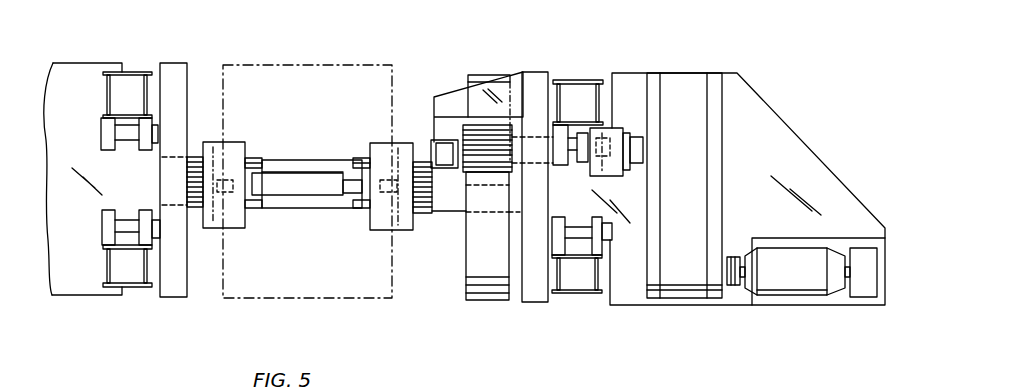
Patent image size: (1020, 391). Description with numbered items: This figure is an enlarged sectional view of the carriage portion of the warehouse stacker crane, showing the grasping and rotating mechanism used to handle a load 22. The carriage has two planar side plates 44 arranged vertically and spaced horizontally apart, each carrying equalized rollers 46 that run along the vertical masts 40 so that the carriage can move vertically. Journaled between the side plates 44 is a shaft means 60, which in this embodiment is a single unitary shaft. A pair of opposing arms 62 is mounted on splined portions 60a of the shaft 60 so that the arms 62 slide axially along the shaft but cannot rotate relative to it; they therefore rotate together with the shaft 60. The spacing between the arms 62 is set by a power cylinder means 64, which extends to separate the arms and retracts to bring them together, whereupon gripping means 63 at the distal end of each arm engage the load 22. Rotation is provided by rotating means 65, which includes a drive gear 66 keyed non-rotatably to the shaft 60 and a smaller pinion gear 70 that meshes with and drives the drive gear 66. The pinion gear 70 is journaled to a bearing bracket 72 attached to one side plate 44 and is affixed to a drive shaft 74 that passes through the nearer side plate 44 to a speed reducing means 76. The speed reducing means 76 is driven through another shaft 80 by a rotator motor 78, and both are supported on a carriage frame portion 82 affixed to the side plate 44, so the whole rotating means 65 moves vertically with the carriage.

The load 22 is at (333, 66).
The masts 40 is at (128, 72).
The side plates 44 is at (172, 65).
The equalized rollers 46 is at (147, 150).
The shaft means 60 is at (309, 149).
The splined portion 60a is at (250, 158).
The opposing arms 62 is at (213, 230).
The gripping means 63 is at (223, 195).
The power cylinder means 64 is at (308, 195).
The rotating means 65 is at (747, 174).
The drive gear 66 is at (485, 292).
The pinion gear 70 is at (482, 125).
The bearing bracket 72 is at (448, 95).
The drive shaft 74 is at (577, 165).
The speed reducing means 76 is at (720, 158).
The rotator motor 78 is at (800, 287).
The shaft 80 is at (732, 285).
The carriage frame portion 82 is at (830, 166).